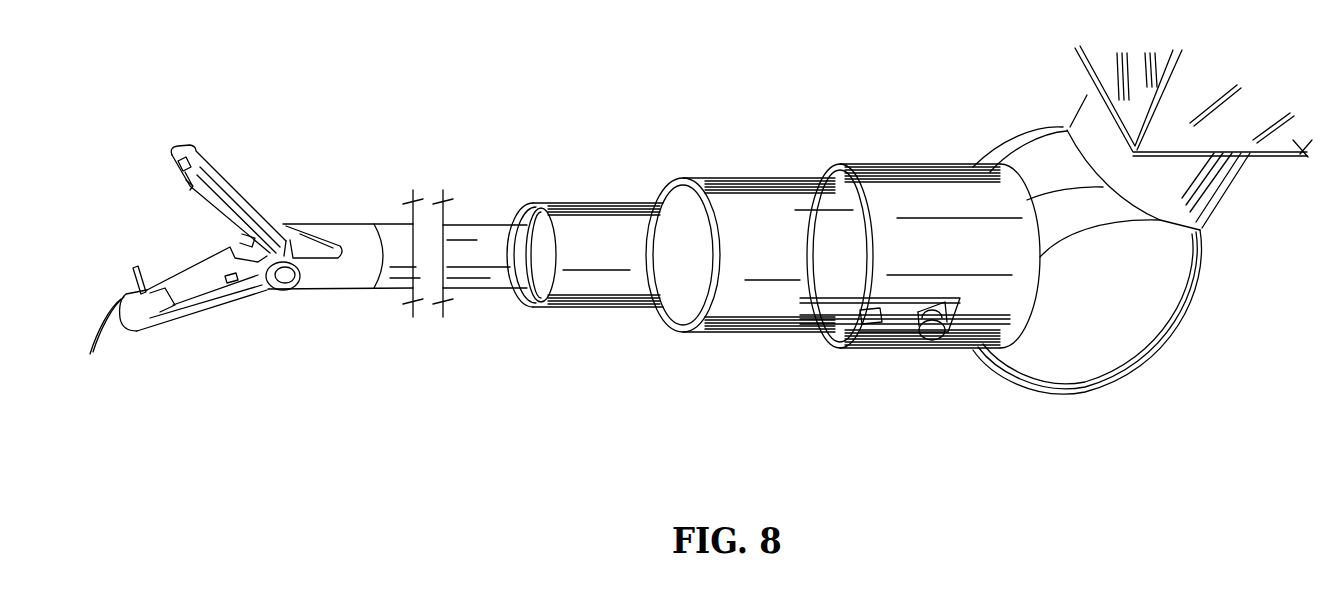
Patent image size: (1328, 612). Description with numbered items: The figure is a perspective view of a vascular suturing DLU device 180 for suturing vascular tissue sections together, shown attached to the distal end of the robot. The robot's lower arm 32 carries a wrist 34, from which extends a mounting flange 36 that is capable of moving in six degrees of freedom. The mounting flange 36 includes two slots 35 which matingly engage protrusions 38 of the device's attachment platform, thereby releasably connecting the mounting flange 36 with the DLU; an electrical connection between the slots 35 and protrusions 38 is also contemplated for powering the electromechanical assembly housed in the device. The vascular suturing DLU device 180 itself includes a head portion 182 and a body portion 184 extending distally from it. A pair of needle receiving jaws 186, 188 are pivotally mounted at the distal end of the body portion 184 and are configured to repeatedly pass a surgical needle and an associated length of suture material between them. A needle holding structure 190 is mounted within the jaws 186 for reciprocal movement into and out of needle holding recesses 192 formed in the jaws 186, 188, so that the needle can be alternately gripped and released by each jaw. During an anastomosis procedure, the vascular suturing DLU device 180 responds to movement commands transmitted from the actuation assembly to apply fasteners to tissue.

The lower arm 32 is at (1293, 140).
The wrist 34 is at (1183, 257).
The slots 35 is at (880, 310).
The mounting flange 36 is at (887, 167).
The protrusions 38 is at (937, 340).
The vascular suturing DLU device 180 is at (678, 151).
The head portion 182 is at (727, 180).
The body portion 184 is at (455, 233).
The needle receiving jaw 186 is at (195, 151).
The needle receiving jaw 188 is at (203, 307).
The needle holding structure 190 is at (152, 257).
The needle holding recesses 192 is at (187, 177).